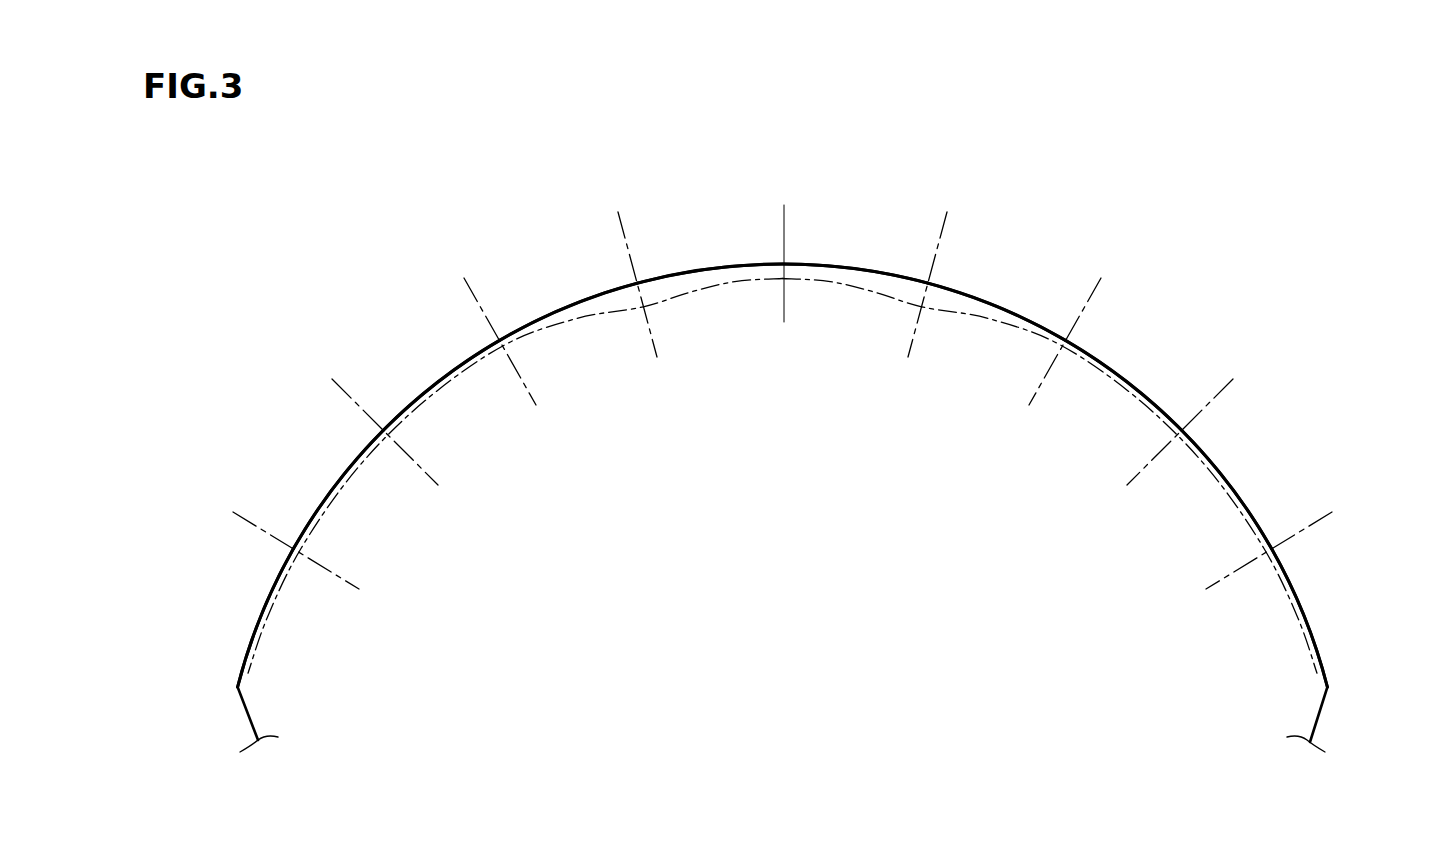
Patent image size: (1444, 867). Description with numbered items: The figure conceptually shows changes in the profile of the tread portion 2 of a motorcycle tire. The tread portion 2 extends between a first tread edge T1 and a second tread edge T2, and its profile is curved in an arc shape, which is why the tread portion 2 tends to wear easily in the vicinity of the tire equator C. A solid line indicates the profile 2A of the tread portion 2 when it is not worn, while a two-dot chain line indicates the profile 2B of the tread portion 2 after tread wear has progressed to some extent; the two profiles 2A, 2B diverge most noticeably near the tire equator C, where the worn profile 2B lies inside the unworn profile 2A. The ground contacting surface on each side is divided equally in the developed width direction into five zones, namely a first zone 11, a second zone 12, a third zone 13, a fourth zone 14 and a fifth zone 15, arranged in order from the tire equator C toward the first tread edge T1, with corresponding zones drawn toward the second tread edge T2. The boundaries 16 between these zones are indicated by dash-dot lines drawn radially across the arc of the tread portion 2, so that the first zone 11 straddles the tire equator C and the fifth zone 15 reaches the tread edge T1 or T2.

The tread portion 2 is at (278, 375).
The profile of the tread portion when not worn 2A is at (1095, 355).
The profile of the tread portion when tread wear has progressed 2B is at (1217, 467).
The first zone 11 is at (706, 262).
The second zone 12 is at (563, 300).
The third zone 13 is at (433, 382).
The fourth zone 14 is at (327, 485).
The fifth zone 15 is at (262, 592).
The boundaries 16 is at (487, 327).
The tire equator C is at (784, 249).
The first tread edge T1 is at (236, 687).
The second tread edge T2 is at (1332, 688).